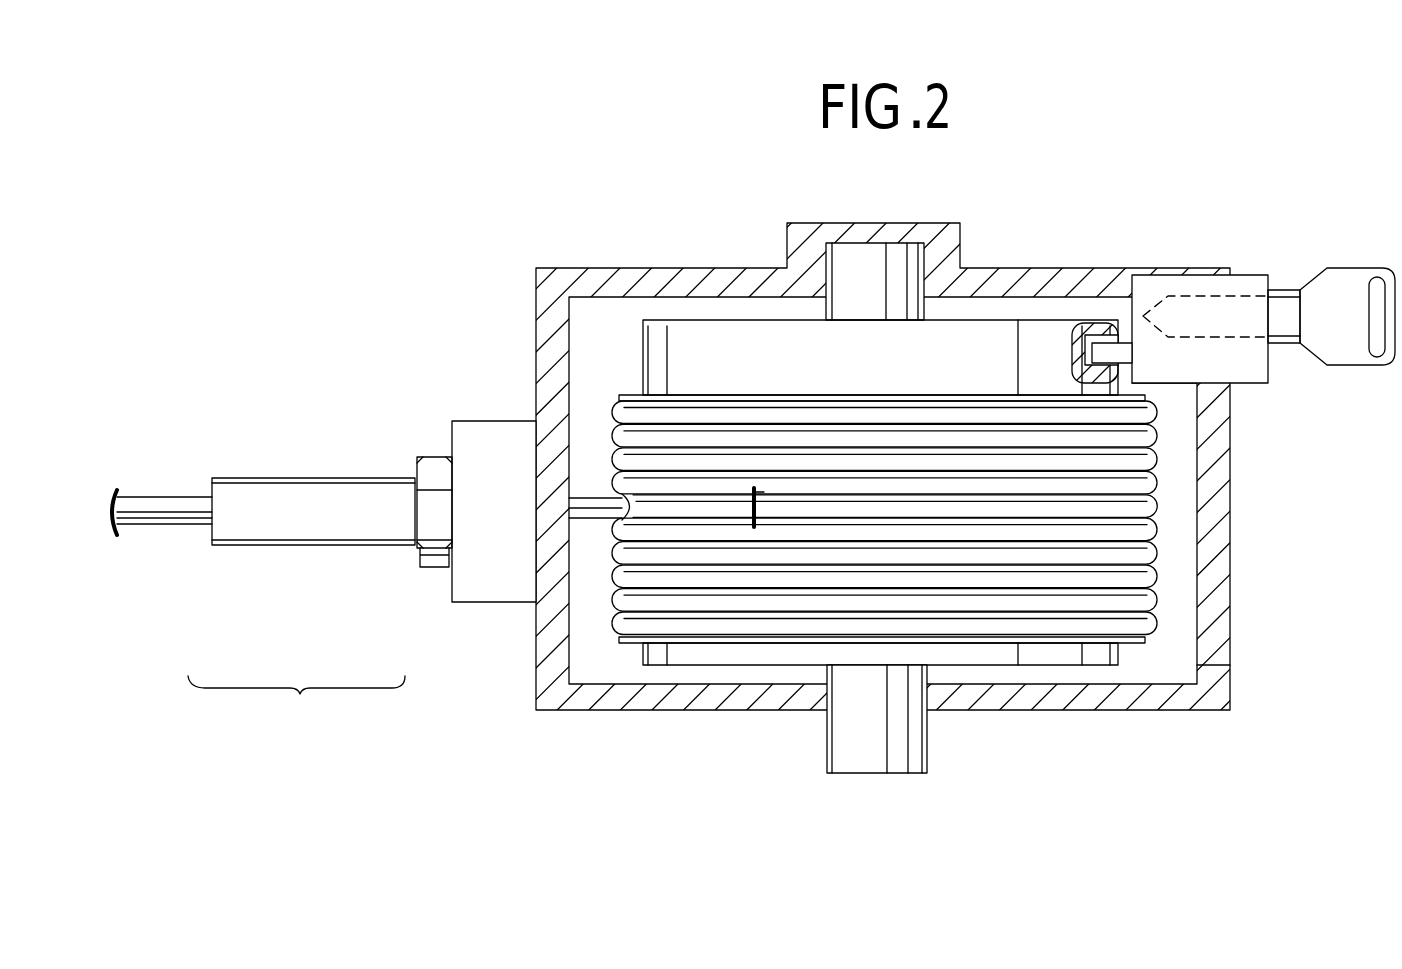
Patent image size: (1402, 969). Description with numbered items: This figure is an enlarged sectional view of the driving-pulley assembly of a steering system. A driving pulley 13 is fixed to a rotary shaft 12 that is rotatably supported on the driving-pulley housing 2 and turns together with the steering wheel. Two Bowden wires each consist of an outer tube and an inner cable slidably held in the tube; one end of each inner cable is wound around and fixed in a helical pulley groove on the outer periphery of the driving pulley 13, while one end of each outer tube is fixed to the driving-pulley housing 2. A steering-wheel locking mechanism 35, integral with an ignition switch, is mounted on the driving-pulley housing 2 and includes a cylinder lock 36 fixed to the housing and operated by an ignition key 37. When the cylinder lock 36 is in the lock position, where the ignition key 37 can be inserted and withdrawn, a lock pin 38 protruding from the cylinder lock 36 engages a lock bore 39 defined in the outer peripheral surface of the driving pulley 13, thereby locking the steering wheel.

The driving-pulley housing 2 is at (650, 283).
The driving pulley 13 is at (750, 340).
The rotary shaft 12 is at (898, 743).
The steering-wheel locking mechanism 35 is at (1240, 332).
The cylinder lock 36 is at (1243, 285).
The ignition key 37 is at (1330, 282).
The lock pin 38 is at (1117, 350).
The lock bore 39 is at (1097, 330).